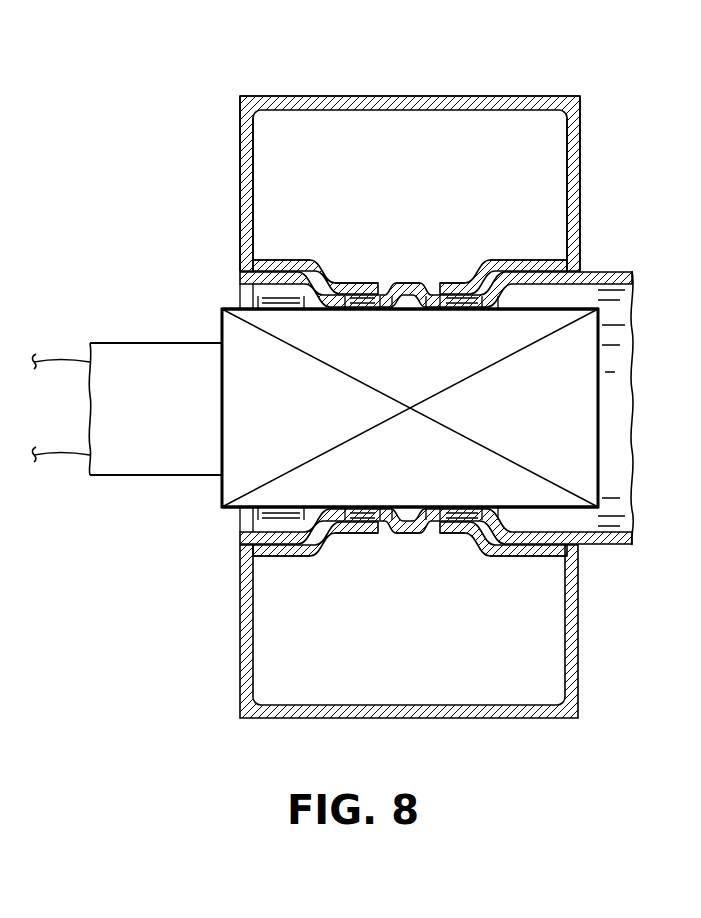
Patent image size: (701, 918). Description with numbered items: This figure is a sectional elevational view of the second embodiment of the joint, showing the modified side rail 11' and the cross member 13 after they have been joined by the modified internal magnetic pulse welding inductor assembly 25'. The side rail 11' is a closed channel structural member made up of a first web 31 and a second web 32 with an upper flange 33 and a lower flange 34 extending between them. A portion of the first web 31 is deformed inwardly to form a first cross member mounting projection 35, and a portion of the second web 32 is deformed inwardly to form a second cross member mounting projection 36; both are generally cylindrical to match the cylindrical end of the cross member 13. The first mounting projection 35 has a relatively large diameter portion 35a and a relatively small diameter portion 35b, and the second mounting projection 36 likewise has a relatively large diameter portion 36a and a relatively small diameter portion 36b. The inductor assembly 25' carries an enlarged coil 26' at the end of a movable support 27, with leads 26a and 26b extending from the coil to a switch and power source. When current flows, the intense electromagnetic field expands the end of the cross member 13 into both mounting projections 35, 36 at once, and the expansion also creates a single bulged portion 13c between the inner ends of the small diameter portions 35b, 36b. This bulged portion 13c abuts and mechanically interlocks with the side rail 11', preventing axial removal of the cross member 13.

The modified side rail 11' is at (371, 155).
The cross member 13 is at (607, 272).
The bulged portion 13c is at (408, 283).
The modified internal magnetic pulse welding inductor assembly 25' is at (345, 368).
The enlarged coil 26' is at (384, 433).
The lead 26a is at (56, 360).
The lead 26b is at (60, 458).
The movable support 27 is at (137, 462).
The first web 31 is at (240, 183).
The second web 32 is at (580, 162).
The upper flange 33 is at (425, 96).
The lower flange 34 is at (455, 718).
The first cross member mounting projection 35 is at (328, 577).
The first relatively large diameter portion 35a is at (290, 260).
The second relatively small diameter portion 35b is at (350, 283).
The second cross member mounting projection 36 is at (470, 578).
The first relatively large diameter portion 36a is at (528, 260).
The second relatively small diameter portion 36b is at (460, 283).